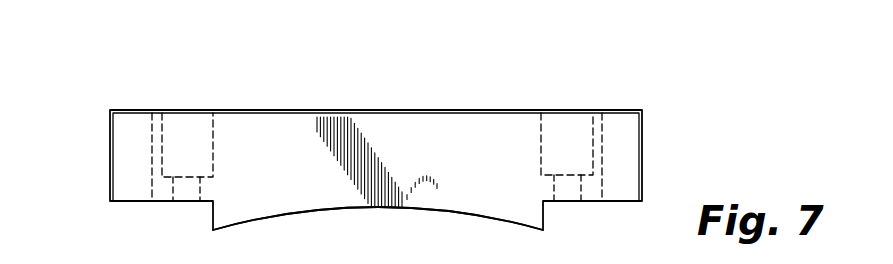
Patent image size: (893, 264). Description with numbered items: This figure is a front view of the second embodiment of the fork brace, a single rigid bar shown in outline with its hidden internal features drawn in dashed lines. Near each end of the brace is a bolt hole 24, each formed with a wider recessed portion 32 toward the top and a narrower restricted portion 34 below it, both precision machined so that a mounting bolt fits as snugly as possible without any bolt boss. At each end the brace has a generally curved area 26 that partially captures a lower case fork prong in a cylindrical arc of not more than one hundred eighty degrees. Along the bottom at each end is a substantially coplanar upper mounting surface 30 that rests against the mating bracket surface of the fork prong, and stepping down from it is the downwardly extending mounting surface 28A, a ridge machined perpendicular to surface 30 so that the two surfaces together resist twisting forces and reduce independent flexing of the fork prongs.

The bolt holes 24 is at (555, 110).
The curved areas 26 is at (152, 153).
The downwardly extending mounting surface 28A is at (213, 222).
The upper mounting surfaces 30 is at (128, 201).
The recessed portion 32 is at (543, 128).
The restricted portion 34 is at (578, 187).